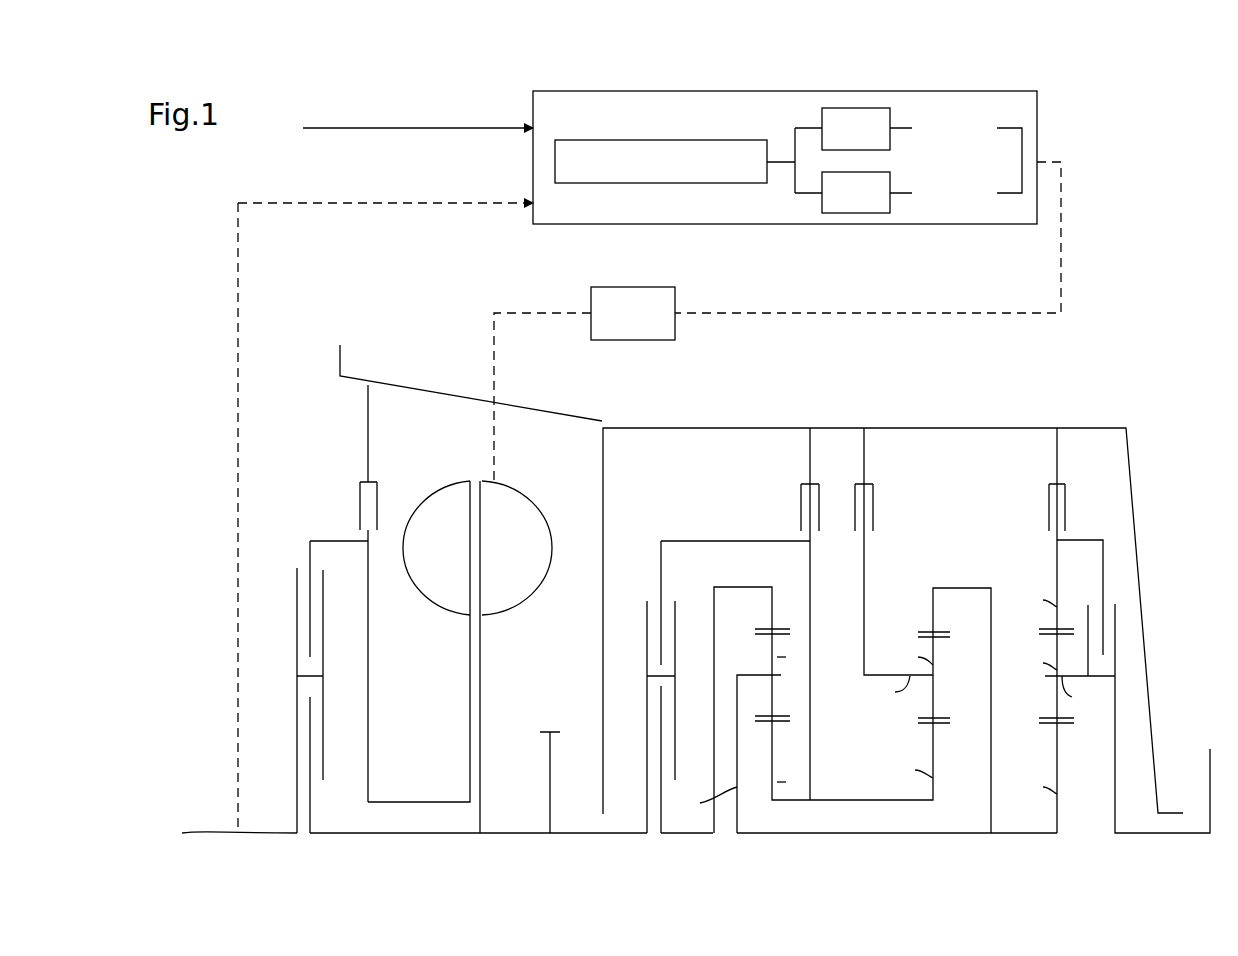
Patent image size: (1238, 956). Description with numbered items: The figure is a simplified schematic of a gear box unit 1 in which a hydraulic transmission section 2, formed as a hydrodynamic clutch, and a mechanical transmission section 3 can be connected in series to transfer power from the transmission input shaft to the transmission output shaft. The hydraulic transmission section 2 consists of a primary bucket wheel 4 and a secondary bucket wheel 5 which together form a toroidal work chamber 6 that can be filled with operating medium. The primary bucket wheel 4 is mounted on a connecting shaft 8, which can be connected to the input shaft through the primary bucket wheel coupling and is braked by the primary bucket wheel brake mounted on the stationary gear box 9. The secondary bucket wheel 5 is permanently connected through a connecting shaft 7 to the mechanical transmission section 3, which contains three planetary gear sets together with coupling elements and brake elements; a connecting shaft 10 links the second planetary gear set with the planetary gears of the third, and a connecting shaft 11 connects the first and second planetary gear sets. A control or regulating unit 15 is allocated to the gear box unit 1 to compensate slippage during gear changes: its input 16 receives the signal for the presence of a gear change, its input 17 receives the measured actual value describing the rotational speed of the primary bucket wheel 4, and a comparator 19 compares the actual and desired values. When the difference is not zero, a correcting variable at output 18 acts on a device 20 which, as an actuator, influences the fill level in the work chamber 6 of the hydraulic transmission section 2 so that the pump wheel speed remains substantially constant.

The gear box unit 1 is at (918, 629).
The hydraulic transmission section 2 is at (410, 609).
The mechanical transmission section 3 is at (938, 842).
The primary bucket wheel 4 is at (452, 585).
The secondary bucket wheel 5 is at (500, 585).
The toroidal work chamber 6 is at (510, 551).
The connecting shaft 7 is at (530, 836).
The connecting shaft 8 is at (400, 802).
The gear box 9 is at (418, 392).
The connecting shaft 10 is at (873, 836).
The connecting shaft 11 is at (878, 800).
The control or regulating unit 15 is at (832, 133).
The input 16 is at (418, 113).
The input 17 is at (385, 499).
The output 18 is at (777, 321).
The comparator 19 is at (651, 110).
The device for influencing the fill level 20 is at (646, 300).